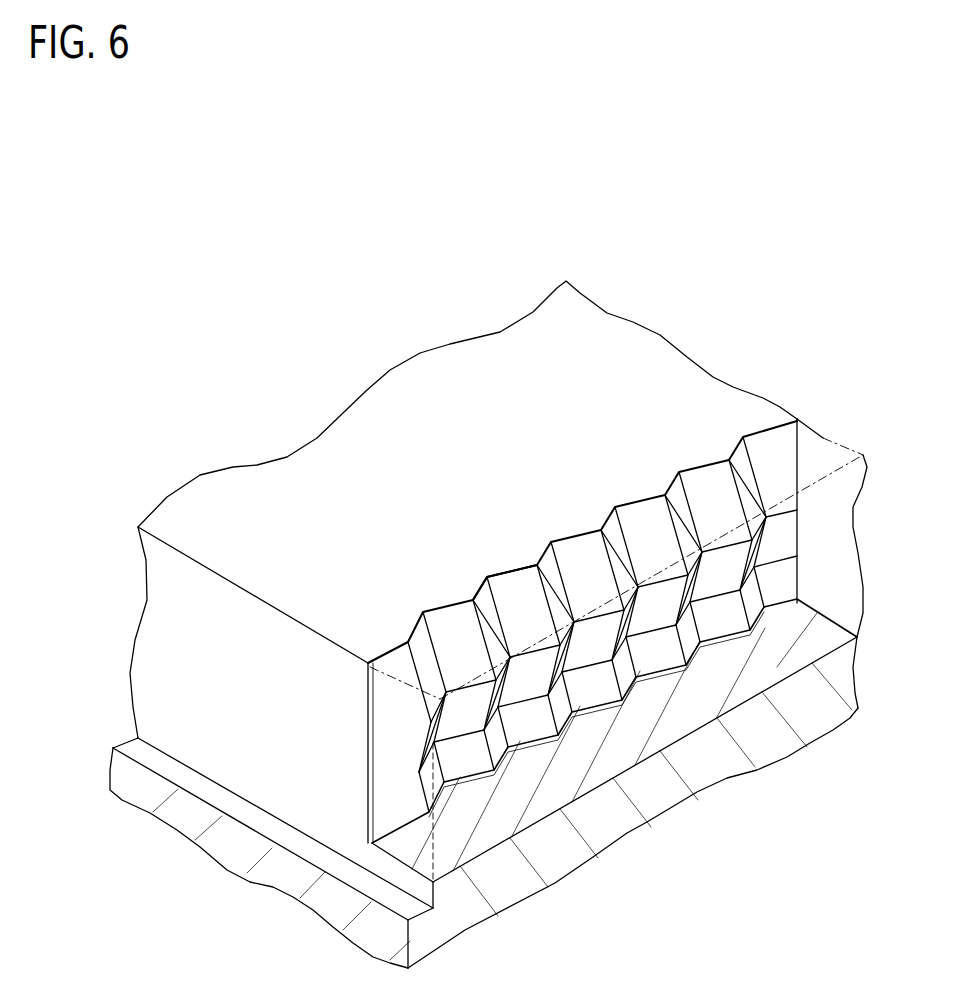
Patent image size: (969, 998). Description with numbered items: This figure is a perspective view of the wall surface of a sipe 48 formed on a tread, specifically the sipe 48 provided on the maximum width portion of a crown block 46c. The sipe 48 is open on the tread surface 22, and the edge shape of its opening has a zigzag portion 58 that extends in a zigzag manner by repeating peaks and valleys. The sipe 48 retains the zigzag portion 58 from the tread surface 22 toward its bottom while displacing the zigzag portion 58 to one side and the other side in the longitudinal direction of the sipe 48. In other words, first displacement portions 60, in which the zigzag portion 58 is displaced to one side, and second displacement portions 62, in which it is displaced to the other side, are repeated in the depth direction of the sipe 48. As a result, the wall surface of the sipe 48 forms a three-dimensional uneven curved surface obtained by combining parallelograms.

The tread surface 22 is at (255, 490).
The crown block 46c is at (638, 300).
The sipe 48 is at (765, 433).
The zigzag portion 58 is at (478, 593).
The first displacement portion 60 is at (798, 511).
The second displacement portion 62 is at (798, 557).